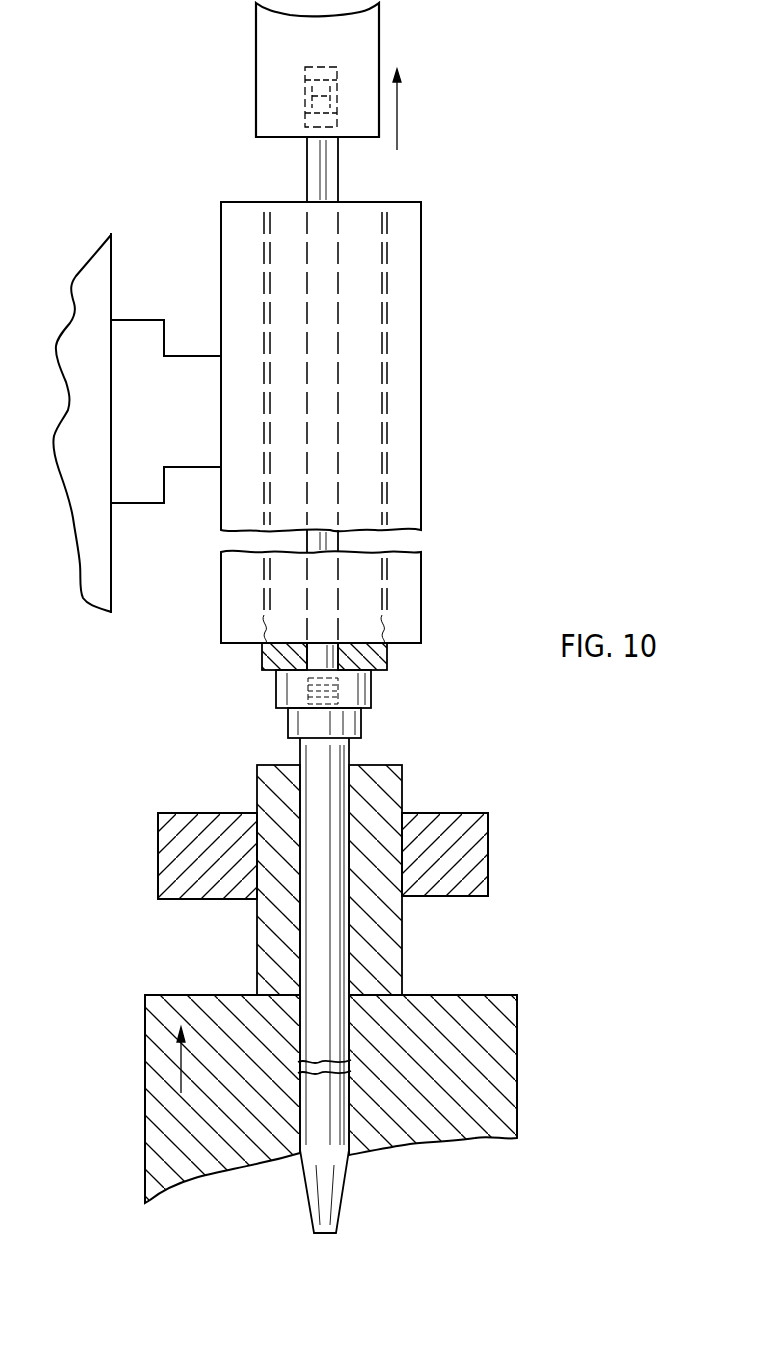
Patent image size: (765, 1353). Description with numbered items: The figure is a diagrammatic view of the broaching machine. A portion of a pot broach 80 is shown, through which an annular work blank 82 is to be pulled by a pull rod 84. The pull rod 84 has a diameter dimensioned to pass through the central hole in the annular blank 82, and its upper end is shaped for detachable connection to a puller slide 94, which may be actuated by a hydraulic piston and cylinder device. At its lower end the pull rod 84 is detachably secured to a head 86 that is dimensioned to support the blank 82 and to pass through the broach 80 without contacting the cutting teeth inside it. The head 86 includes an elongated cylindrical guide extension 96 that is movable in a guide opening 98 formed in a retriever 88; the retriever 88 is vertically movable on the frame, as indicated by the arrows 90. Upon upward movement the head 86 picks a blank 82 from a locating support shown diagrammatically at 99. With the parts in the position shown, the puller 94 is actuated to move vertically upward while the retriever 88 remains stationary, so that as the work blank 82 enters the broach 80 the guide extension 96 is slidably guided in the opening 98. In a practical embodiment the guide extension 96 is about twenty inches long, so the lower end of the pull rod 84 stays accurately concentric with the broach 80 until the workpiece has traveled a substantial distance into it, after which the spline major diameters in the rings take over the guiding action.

The puller slide 94 is at (379, 40).
The pull rod 84 is at (339, 172).
The pot broach 80 is at (421, 338).
The annular work blank 82 is at (388, 655).
The head 86 is at (372, 697).
The locating support 99 is at (488, 870).
The guide extension 96 is at (336, 968).
The guide opening 98 is at (306, 950).
The retriever 88 is at (517, 1043).
The arrows 90 is at (181, 1078).